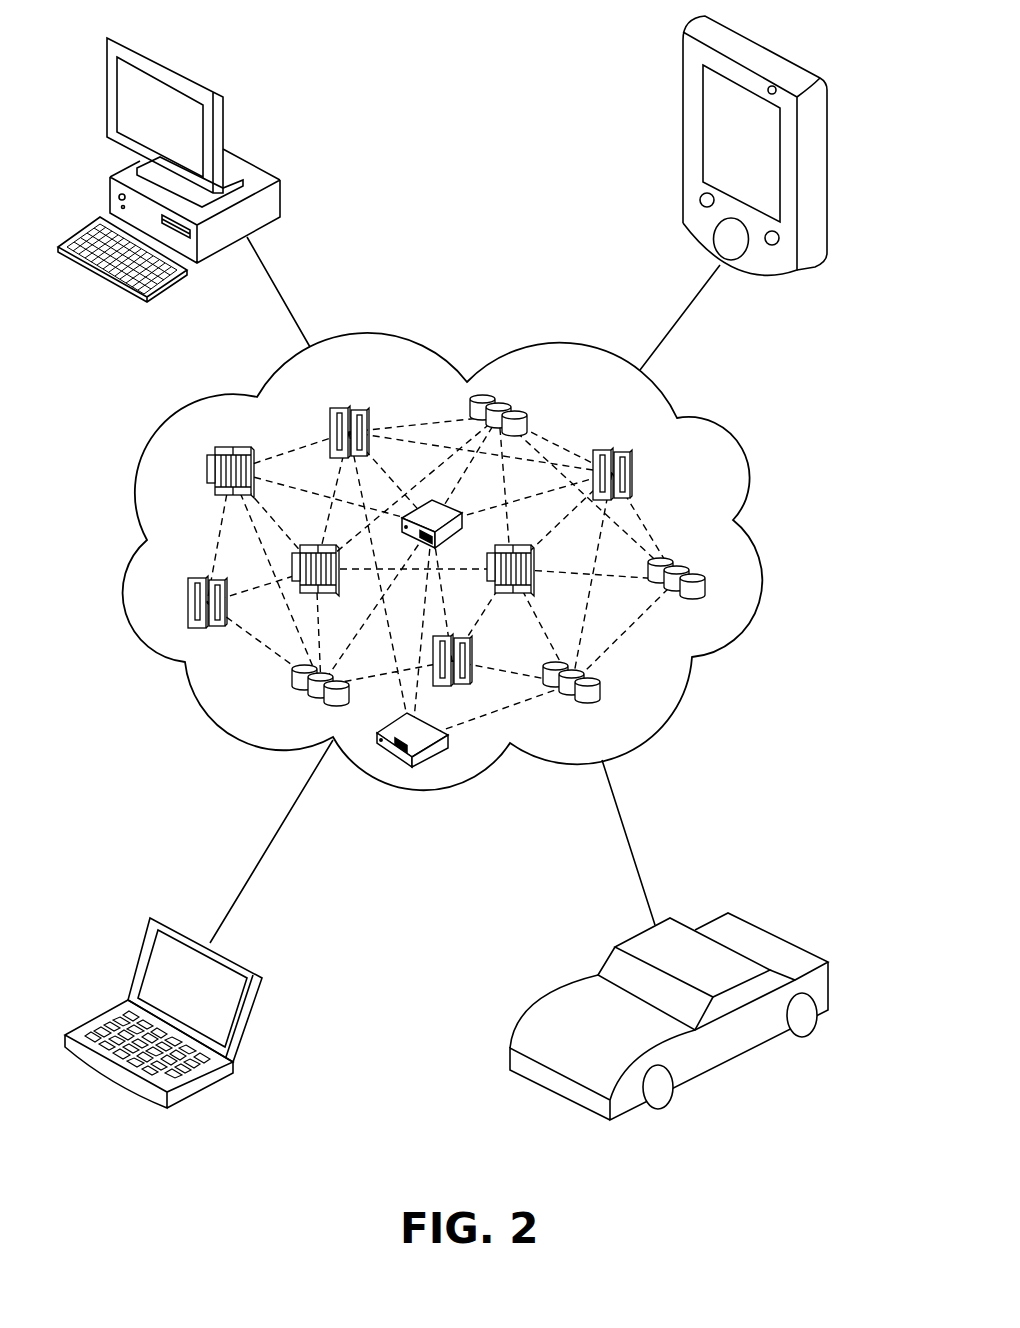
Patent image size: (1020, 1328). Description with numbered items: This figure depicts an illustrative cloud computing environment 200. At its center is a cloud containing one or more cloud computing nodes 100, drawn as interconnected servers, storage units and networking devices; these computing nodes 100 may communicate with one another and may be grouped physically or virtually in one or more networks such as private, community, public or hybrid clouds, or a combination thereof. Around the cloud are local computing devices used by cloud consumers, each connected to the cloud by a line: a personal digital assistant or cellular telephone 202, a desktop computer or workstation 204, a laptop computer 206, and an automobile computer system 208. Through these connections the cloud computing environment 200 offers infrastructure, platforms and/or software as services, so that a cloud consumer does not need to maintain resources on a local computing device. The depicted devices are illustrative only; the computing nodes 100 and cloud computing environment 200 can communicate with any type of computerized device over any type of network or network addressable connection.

The cloud computing node 100 is at (678, 495).
The cloud computing environment 200 is at (470, 236).
The personal digital assistant (PDA) or cellular telephone 202 is at (682, 92).
The desktop computer 204 is at (280, 195).
The laptop computer 206 is at (262, 985).
The automobile computer system 208 is at (832, 982).